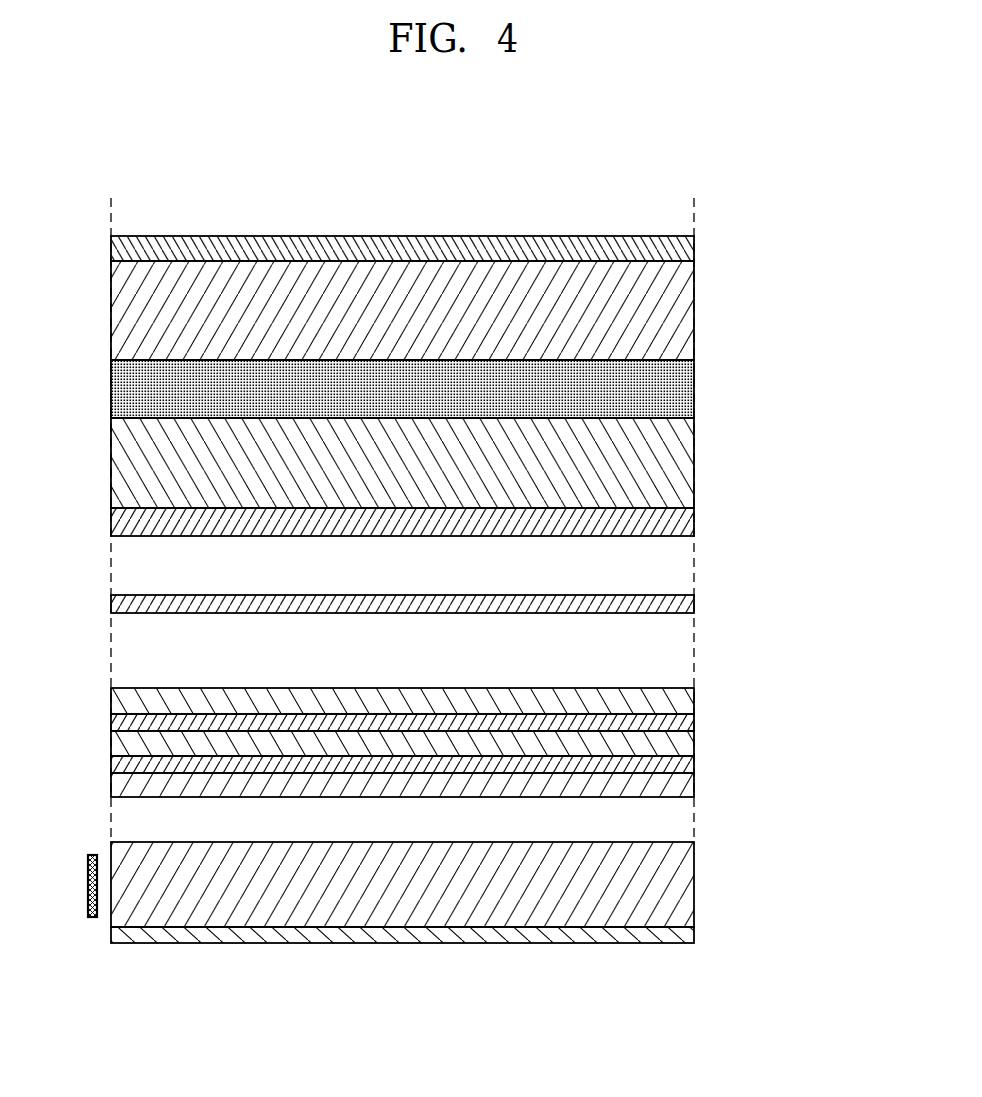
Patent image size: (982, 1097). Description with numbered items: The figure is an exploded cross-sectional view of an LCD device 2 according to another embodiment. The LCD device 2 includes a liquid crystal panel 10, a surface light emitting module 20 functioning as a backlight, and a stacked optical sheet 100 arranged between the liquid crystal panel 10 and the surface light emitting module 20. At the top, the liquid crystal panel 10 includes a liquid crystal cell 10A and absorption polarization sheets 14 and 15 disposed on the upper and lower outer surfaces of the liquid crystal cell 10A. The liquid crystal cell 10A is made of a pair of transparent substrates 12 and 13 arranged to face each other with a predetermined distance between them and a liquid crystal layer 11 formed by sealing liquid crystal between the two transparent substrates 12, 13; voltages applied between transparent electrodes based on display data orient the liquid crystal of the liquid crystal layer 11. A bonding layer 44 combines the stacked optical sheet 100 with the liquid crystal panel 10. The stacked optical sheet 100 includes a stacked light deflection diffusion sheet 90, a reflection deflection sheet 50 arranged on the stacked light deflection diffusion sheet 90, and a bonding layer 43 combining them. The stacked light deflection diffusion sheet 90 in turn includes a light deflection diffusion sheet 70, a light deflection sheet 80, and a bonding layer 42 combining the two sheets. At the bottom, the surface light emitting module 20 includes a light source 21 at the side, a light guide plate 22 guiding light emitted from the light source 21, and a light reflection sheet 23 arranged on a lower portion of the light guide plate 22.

The LCD device 2 is at (461, 535).
The liquid crystal panel 10 is at (428, 386).
The liquid crystal cell 10A is at (398, 384).
The liquid crystal layer 11 is at (690, 389).
The transparent substrate 12 is at (690, 463).
The transparent substrate 13 is at (690, 313).
The absorption polarization sheet 14 is at (436, 521).
The absorption polarization sheet 15 is at (690, 248).
The bonding layer 44 is at (690, 602).
The stacked optical sheet 100 is at (501, 744).
The reflection deflection sheet 50 is at (690, 698).
The bonding layer 43 is at (690, 721).
The stacked light deflection diffusion sheet 90 is at (466, 766).
The light deflection sheet 80 is at (690, 743).
The bonding layer 42 is at (690, 764).
The light deflection diffusion sheet 70 is at (435, 787).
The surface light emitting module 20 is at (426, 895).
The light source 21 is at (87, 886).
The light guide plate 22 is at (690, 884).
The light reflection sheet 23 is at (436, 935).